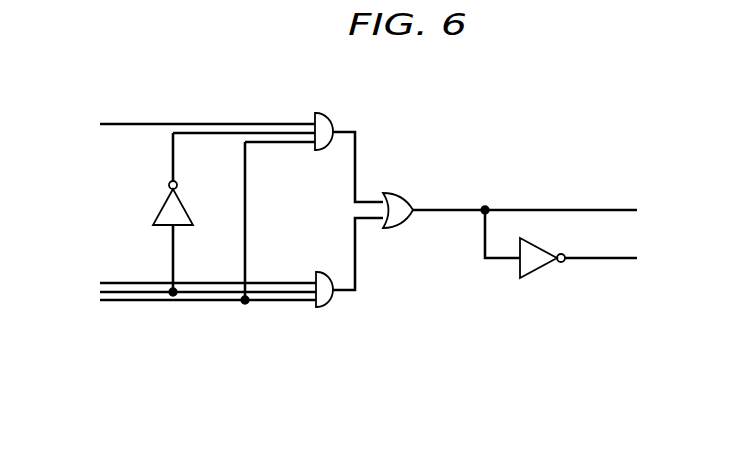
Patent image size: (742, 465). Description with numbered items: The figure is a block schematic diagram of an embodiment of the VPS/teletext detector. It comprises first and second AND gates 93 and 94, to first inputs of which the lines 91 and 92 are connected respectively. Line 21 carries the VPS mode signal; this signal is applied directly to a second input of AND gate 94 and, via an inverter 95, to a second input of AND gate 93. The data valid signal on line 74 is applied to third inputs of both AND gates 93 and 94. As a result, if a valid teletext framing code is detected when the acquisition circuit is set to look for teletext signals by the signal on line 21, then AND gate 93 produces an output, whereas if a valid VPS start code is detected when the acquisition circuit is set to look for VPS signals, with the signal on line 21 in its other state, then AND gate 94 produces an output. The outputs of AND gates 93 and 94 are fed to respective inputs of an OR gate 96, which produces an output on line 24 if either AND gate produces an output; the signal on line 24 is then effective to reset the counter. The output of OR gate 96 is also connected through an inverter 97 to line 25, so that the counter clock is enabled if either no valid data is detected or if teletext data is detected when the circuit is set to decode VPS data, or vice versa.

The line 91 is at (112, 124).
The first AND gate 93 is at (331, 117).
The inverter 95 is at (162, 208).
The line 92 is at (113, 283).
The line 21 is at (193, 292).
The line 74 is at (114, 300).
The second AND gate 94 is at (336, 298).
The OR gate 96 is at (404, 222).
The line 24 is at (628, 210).
The inverter 97 is at (540, 267).
The line 25 is at (628, 258).